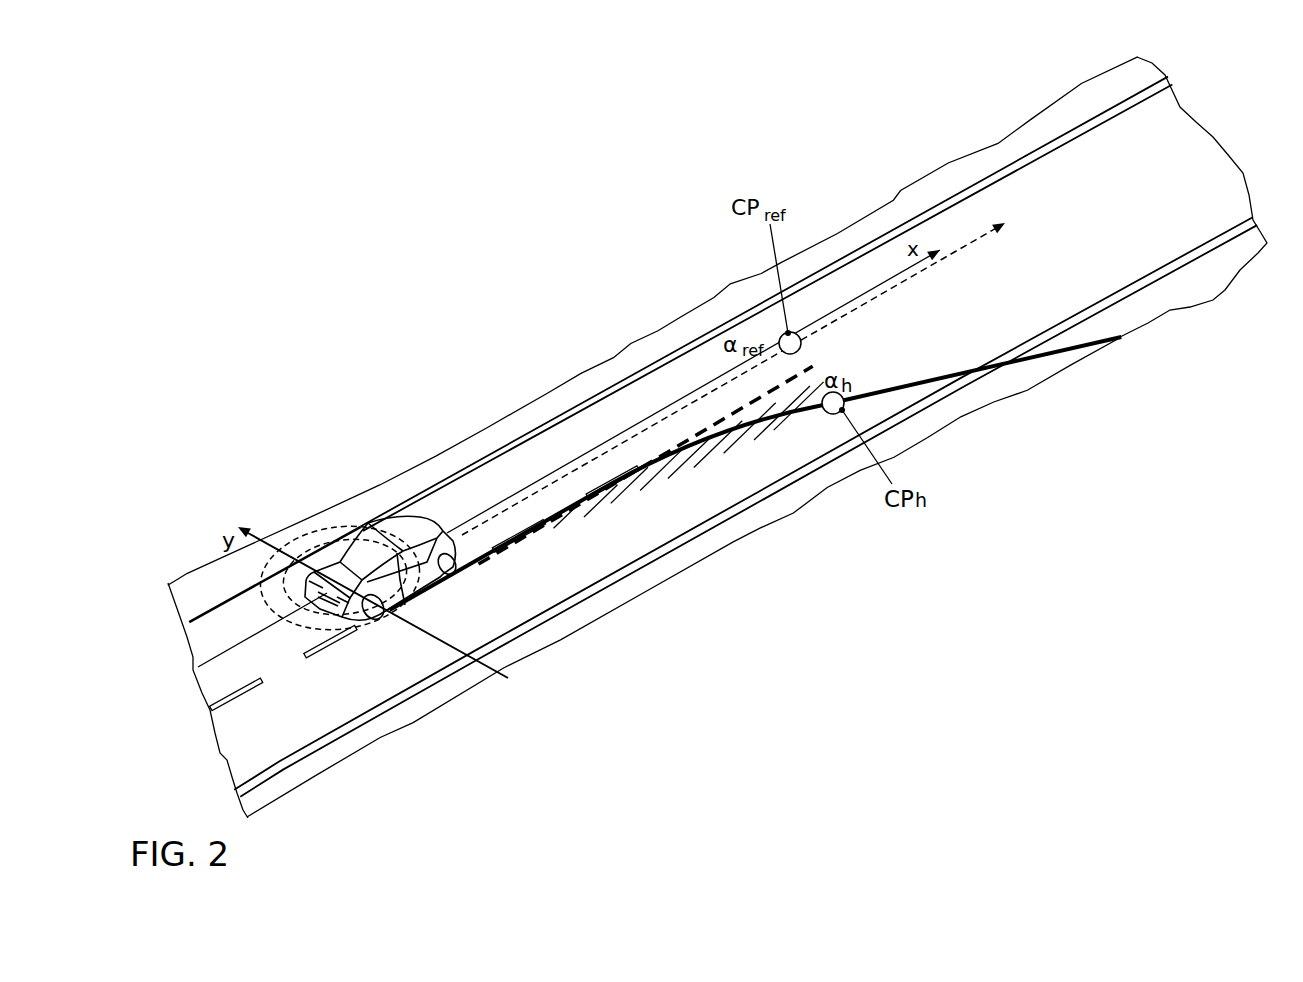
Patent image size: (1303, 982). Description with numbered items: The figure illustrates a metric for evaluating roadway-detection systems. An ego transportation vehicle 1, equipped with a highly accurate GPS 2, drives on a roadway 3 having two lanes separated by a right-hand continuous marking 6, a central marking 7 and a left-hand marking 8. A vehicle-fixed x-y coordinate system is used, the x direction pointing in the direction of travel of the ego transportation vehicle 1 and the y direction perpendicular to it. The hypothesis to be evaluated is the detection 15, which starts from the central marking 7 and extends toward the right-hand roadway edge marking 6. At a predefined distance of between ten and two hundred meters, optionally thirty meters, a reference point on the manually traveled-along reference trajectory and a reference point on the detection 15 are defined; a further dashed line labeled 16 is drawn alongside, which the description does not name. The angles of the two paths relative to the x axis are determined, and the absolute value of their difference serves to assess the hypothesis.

The ego transportation vehicle 1 is at (368, 542).
The GPS 2 is at (305, 537).
The roadway 3 is at (686, 610).
The right-hand continuous marking 6 is at (817, 463).
The central marking 7 is at (238, 693).
The left-hand marking 8 is at (902, 235).
The detection 15 is at (1078, 345).
The reference trajectory 16 is at (980, 235).